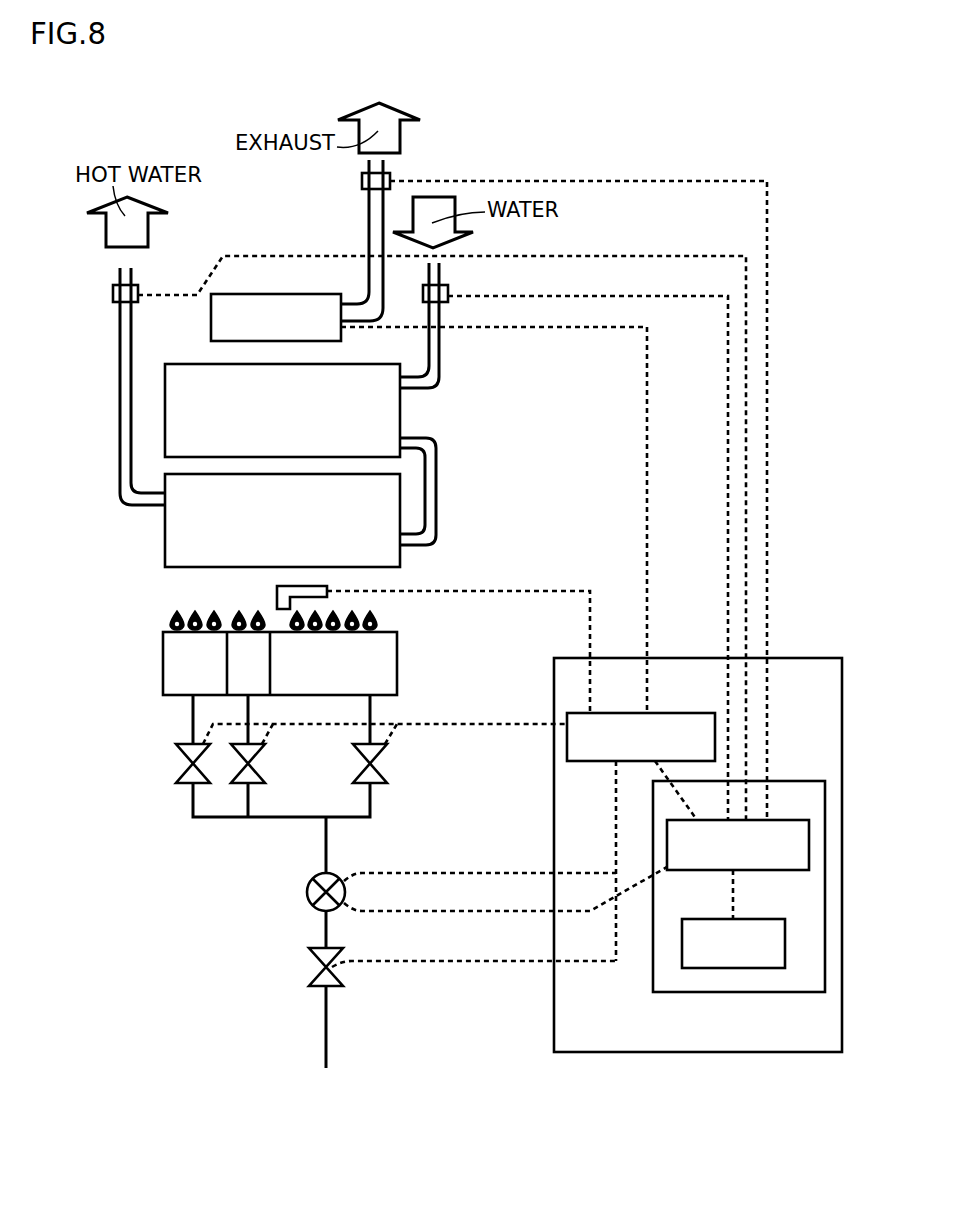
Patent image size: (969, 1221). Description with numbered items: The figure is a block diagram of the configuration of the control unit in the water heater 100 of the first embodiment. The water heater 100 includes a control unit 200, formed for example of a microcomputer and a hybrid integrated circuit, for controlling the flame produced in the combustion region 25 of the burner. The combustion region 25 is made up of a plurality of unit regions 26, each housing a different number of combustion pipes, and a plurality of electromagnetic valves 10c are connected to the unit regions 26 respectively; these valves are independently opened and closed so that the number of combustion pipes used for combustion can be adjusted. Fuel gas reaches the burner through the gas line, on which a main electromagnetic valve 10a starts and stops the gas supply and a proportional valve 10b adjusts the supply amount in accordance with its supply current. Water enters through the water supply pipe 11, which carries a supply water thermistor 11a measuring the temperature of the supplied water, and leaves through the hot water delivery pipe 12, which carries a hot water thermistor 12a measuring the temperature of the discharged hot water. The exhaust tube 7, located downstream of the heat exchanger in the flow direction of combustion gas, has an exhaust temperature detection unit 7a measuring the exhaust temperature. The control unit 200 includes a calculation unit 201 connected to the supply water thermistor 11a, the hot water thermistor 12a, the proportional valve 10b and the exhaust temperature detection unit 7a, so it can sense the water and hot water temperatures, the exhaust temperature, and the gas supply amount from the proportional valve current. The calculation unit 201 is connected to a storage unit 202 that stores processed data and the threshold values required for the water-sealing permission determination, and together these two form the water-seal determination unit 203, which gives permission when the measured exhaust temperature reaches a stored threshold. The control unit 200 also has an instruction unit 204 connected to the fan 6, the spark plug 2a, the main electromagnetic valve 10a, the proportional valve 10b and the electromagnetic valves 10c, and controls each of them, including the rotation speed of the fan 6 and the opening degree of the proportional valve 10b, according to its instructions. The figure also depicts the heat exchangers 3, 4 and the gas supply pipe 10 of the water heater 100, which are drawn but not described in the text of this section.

The water heater 100 is at (790, 172).
The spark plug 2a is at (324, 590).
The primary heat exchanger 3 is at (165, 530).
The secondary heat exchanger 4 is at (400, 418).
The fan 6 is at (322, 294).
The exhaust tube 7 is at (369, 224).
The exhaust temperature detection unit 7a is at (388, 173).
The gas supply pipe 10 is at (326, 1034).
The main electromagnetic valve 10a is at (333, 951).
The proportional valve 10b is at (337, 878).
The electromagnetic valve 10c is at (385, 773).
The water supply pipe 11 is at (441, 372).
The supply water thermistor 11a is at (448, 286).
The hot water delivery pipe 12 is at (120, 320).
The hot water thermistor 12a is at (138, 286).
The combustion region 25 is at (143, 618).
The unit region 26 is at (232, 645).
The control unit 200 is at (801, 658).
The calculation unit 201 is at (767, 820).
The storage unit 202 is at (770, 919).
The water-seal determination unit 203 is at (781, 781).
The instruction unit 204 is at (656, 713).